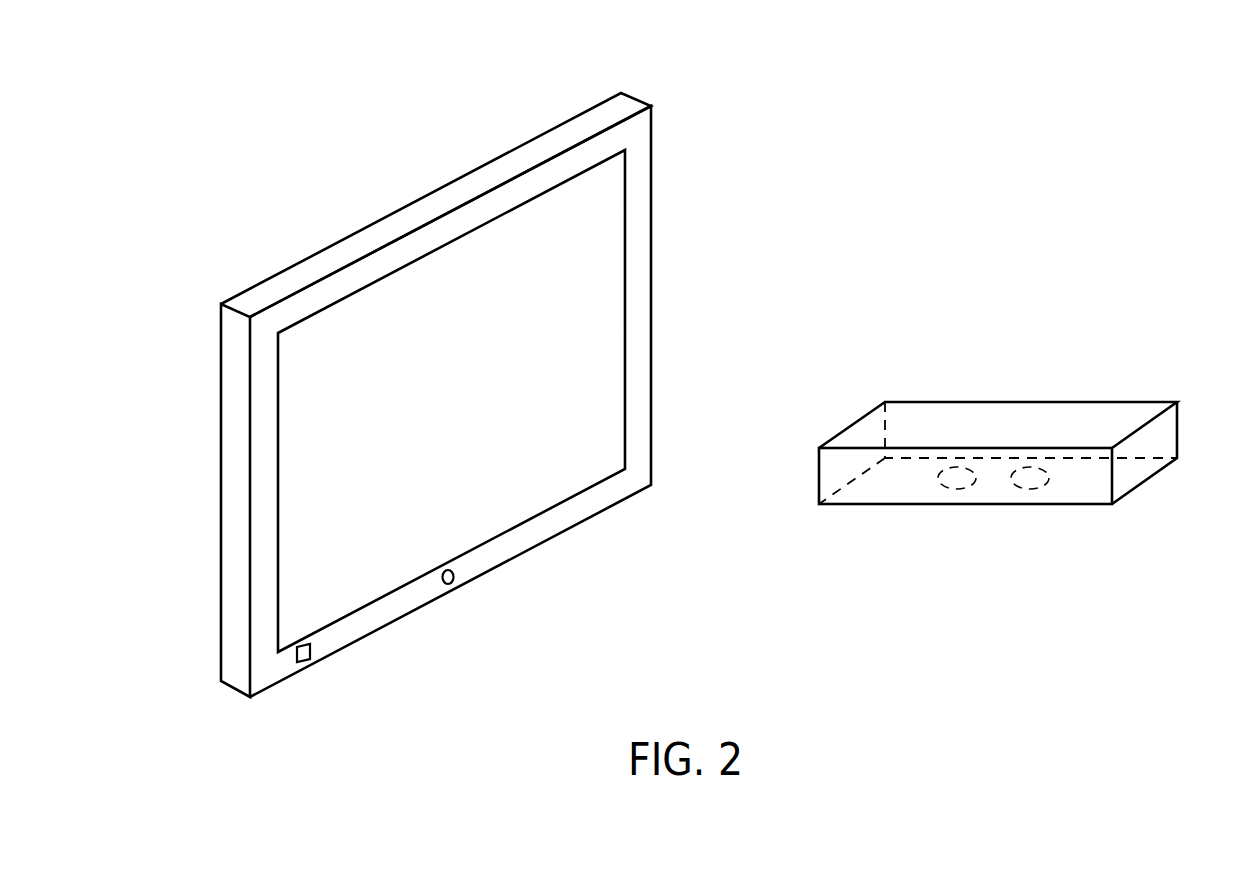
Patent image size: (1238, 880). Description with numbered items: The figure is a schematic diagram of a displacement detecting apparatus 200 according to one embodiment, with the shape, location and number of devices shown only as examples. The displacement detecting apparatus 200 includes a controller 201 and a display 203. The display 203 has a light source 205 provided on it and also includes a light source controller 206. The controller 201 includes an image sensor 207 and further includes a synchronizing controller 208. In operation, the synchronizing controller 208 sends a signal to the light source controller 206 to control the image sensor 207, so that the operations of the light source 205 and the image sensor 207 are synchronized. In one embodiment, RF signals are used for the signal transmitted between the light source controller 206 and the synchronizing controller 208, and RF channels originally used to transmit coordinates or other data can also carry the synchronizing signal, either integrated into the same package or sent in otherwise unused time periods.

The displacement detecting apparatus 200 is at (1050, 106).
The controller 201 is at (1061, 363).
The display 203 is at (345, 210).
The light source 205 is at (450, 585).
The light source controller 206 is at (308, 660).
The image sensor 207 is at (955, 484).
The synchronizing controller 208 is at (1028, 484).